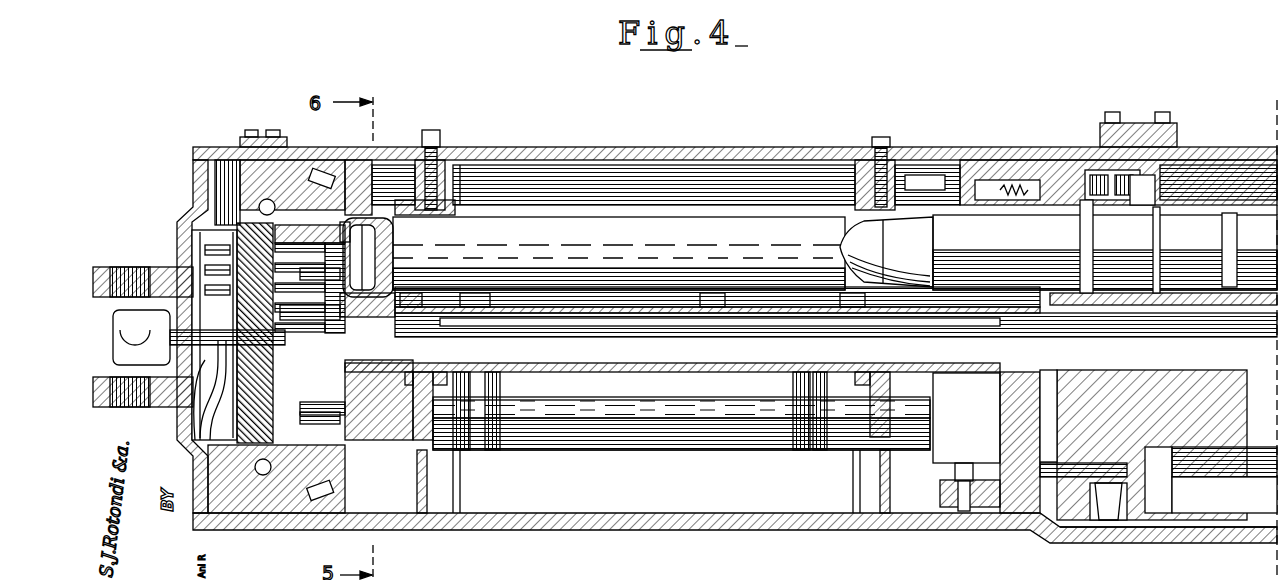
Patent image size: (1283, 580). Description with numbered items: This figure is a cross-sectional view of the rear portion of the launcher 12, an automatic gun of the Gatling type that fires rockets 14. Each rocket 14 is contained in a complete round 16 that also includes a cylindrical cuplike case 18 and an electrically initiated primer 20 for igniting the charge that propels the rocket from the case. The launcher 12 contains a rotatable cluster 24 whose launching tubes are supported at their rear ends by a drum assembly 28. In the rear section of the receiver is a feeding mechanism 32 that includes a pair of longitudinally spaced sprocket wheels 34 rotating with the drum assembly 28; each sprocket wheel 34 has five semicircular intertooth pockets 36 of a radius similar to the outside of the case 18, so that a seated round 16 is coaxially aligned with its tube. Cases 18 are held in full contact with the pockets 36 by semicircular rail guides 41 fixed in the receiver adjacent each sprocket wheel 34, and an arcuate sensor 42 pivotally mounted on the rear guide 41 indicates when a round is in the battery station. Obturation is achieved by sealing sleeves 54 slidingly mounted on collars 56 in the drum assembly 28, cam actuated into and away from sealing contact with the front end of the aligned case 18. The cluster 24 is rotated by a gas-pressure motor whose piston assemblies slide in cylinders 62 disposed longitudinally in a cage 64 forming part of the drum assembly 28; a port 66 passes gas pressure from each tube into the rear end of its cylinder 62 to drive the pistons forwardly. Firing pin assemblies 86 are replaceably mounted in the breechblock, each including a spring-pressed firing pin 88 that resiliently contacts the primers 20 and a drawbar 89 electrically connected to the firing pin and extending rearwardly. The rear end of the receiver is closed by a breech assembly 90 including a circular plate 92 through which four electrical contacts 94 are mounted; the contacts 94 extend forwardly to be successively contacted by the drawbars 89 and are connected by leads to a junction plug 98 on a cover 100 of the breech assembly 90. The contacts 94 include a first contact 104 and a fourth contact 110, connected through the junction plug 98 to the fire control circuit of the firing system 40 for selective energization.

The launcher 12 is at (810, 130).
The rocket 14 is at (920, 247).
The complete round 16 is at (658, 202).
The case 18 is at (622, 282).
The primer 20 is at (380, 248).
The rotatable cluster 24 is at (1195, 168).
The drum assembly 28 is at (1204, 414).
The feeding mechanism 32 is at (437, 432).
The sprocket wheel 34 is at (440, 380).
The intertooth pocket 36 is at (422, 284).
The firing system 40 is at (210, 233).
The rail guide 41 is at (445, 200).
The sensor 42 is at (408, 170).
The sealing sleeve 54 is at (945, 455).
The collar 56 is at (1118, 280).
The cylinder 62 is at (1243, 500).
The cage 64 is at (1110, 385).
The port 66 is at (1150, 462).
The firing pin assembly 86 is at (386, 278).
The firing pin 88 is at (388, 252).
The drawbar 89 is at (348, 318).
The breech assembly 90 is at (178, 418).
The circular plate 92 is at (268, 412).
The electrical contact 94 is at (305, 345).
The junction plug 98 is at (138, 312).
The cover 100 is at (190, 234).
The first contact 104 is at (288, 247).
The fourth contact 110 is at (222, 352).